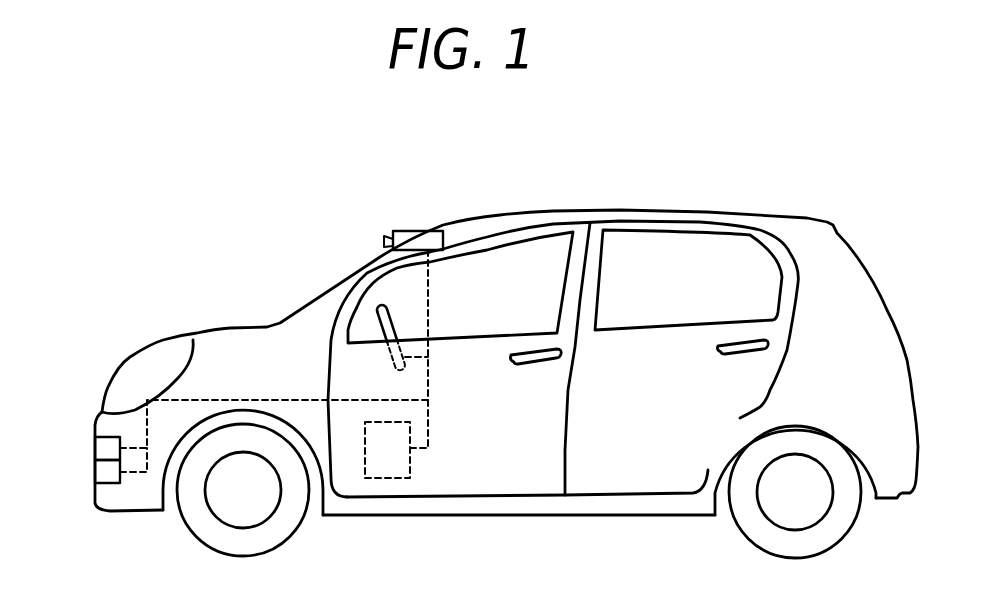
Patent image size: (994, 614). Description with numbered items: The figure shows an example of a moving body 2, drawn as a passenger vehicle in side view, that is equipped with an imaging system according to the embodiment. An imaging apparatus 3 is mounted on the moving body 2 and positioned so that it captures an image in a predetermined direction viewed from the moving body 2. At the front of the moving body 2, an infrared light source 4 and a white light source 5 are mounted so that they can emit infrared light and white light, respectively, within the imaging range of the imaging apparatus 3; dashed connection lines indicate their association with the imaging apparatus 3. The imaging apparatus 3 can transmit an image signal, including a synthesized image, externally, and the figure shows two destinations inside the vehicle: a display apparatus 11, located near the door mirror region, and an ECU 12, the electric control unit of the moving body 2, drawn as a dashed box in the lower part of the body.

The moving body 2 is at (605, 212).
The imaging apparatus 3 is at (408, 231).
The infrared light source 4 is at (102, 450).
The white light source 5 is at (102, 474).
The display apparatus 11 is at (391, 313).
The ECU (Electric Control Unit) 12 is at (390, 463).